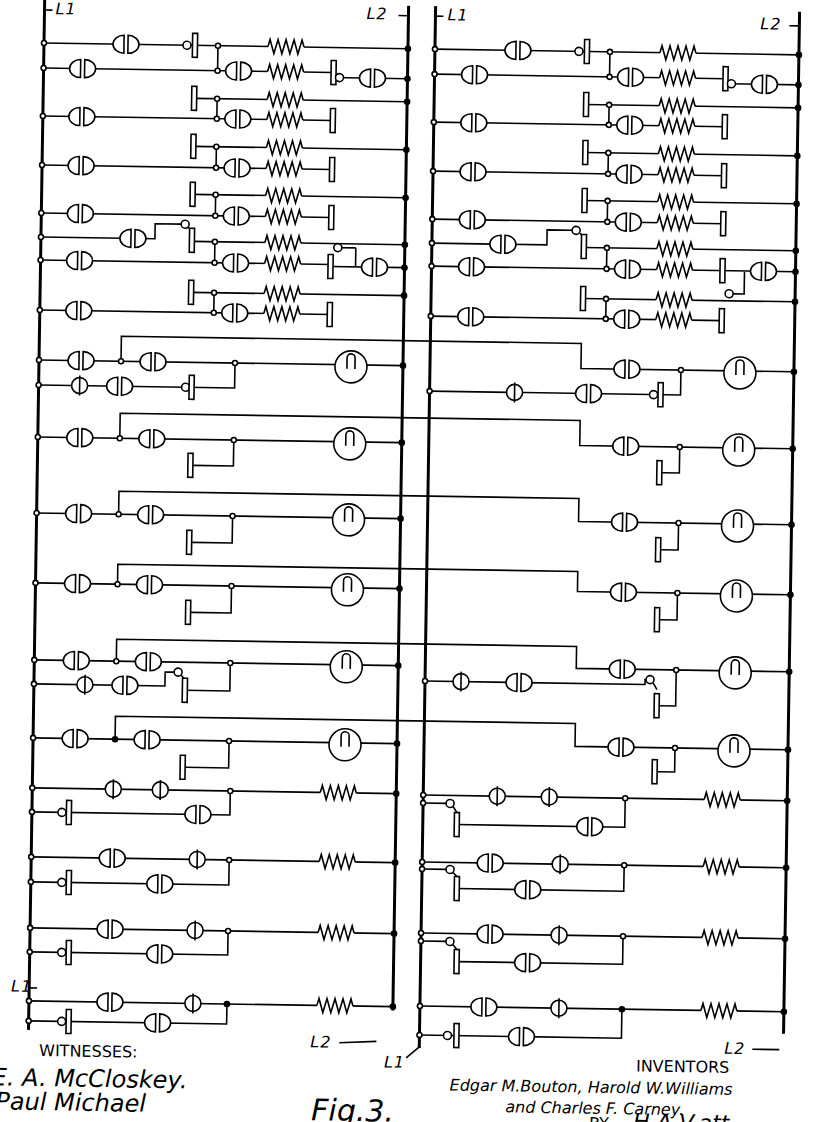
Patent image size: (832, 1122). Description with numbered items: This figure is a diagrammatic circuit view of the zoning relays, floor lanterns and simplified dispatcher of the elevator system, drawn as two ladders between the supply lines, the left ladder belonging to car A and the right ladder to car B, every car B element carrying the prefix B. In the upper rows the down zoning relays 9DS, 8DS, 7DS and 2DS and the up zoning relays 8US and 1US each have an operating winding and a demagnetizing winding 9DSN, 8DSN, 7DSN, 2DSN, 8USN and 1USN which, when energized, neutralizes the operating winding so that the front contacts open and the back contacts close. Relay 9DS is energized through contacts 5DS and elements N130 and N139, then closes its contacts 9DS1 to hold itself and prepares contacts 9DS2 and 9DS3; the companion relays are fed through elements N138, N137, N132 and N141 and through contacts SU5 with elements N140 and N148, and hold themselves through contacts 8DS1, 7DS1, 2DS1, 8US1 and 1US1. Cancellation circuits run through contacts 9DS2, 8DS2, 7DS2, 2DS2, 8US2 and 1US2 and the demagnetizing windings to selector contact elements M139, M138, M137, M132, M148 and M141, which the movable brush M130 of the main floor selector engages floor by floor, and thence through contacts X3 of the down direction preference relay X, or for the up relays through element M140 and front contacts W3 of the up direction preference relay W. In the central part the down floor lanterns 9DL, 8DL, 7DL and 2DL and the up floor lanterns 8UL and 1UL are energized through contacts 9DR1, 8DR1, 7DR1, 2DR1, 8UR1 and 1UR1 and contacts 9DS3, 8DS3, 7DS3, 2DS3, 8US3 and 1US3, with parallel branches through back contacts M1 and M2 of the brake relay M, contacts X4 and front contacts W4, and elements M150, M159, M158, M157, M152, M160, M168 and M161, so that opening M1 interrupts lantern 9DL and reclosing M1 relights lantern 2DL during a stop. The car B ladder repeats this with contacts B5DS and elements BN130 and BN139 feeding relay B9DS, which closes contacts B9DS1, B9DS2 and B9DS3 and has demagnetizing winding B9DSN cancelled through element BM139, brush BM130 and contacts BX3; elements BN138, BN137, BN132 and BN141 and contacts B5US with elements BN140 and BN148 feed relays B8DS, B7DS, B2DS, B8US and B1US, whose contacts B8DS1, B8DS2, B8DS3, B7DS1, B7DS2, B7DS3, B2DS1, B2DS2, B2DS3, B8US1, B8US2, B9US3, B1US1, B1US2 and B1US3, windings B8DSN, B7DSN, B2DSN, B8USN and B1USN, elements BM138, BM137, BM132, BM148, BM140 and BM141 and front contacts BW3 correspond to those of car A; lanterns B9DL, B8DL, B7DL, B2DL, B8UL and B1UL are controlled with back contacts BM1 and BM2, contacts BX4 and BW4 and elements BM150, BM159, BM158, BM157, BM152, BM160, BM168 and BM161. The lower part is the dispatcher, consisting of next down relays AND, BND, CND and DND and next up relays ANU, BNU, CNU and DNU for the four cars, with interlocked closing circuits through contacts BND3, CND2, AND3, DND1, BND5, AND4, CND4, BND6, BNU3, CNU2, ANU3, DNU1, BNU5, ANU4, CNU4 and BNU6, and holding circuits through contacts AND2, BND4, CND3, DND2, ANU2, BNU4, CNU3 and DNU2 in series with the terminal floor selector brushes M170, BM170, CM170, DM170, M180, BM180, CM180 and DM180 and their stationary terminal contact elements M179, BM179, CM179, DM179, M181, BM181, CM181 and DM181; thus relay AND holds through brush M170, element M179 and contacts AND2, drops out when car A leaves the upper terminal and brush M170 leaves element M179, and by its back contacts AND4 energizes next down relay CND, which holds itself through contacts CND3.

The contacts of down selector relay SD 5DS is at (134, 36).
The circuit element N130 is at (187, 39).
The circuit element N139 is at (200, 36).
The down zoning relay 9DS is at (294, 37).
The contacts of zoning relay 9DS 9DS1 is at (96, 58).
The contacts of zoning relay 9DS 9DS2 is at (244, 64).
The demagnetizing winding of relay 9DS 9DSN is at (303, 67).
The relay coil M139 is at (339, 66).
The movable contact brush of main floor selector M130 is at (354, 87).
The contacts of down direction preference relay X X3 is at (378, 84).
The relay coil N138 is at (192, 92).
The down zoning relay 8DS is at (301, 93).
The contacts of zoning relay 8DS 8DS1 is at (96, 106).
The contacts of zoning relay 8DS 8DS2 is at (244, 112).
The demagnetizing winding of relay 8DS 8DSN is at (303, 115).
The stationary contact element of main floor selector M138 is at (338, 116).
The relay coil N137 is at (192, 140).
The down zoning relay 7DS is at (300, 141).
The contacts of zoning relay 7DS 7DS1 is at (96, 155).
The contacts of zoning relay 7DS 7DS2 is at (243, 161).
The demagnetizing coil of relay 7DS 7DSN is at (302, 163).
The stationary contact element of main floor selector M137 is at (338, 165).
The relay coil N132 is at (192, 188).
The down zoning relay 2DS is at (299, 189).
The contacts of zoning relay 2DS 2DS1 is at (96, 203).
The contacts of zoning relay 2DS 2DS2 is at (242, 209).
The demagnetizing coil of relay 2DS 2DSN is at (301, 212).
The stationary contact element of main floor selector M132 is at (338, 213).
The contact SU5 is at (136, 230).
The contact N140 is at (186, 226).
The relay coil N148 is at (191, 250).
The up zoning relay 8US is at (299, 236).
The contact M140 is at (344, 240).
The contact 8US1 is at (96, 250).
The contact 8US2 is at (241, 256).
The demagnetizing winding of relay 8US 8USN is at (300, 259).
The relay coil M148 is at (339, 272).
The front contacts of up direction preference relay W W3 is at (392, 248).
The relay coil N141 is at (192, 287).
The up zoning relay 1US is at (298, 287).
The contact 1US1 is at (96, 301).
The contact 1US2 is at (241, 306).
The demagnetizing winding of relay 1US 1USN is at (300, 309).
The relay coil M141 is at (338, 311).
The contact 9DR1 is at (98, 350).
The contacts of zoning relay 9DS 9DS3 is at (170, 350).
The down floor lantern 9DL is at (342, 356).
The back contacts of brake relay M M1 is at (93, 384).
The contacts of down direction preference relay X X4 is at (137, 383).
The contact M150 is at (189, 381).
The relay coil M159 is at (201, 392).
The contacts in circuit of lantern 8DL 8DR1 is at (98, 427).
The contacts of zoning relay 8DS 8DS3 is at (166, 431).
The down floor lantern 8DL is at (340, 434).
The relay coil M158 is at (166, 465).
The contact 7DR1 is at (98, 503).
The contacts of zoning relay 7DS 7DS3 is at (170, 502).
The down floor lantern 7DL is at (340, 510).
The relay coil M157 is at (165, 542).
The contact 2DR1 is at (98, 573).
The contacts of zoning relay 2DS 2DS3 is at (166, 577).
The down floor lantern 2DL is at (340, 581).
The relay coil M152 is at (163, 611).
The contact 8UR1 is at (98, 650).
The contact 8US3 is at (166, 654).
The up floor lantern 8UL is at (340, 658).
The back contacts of brake relay M M2 is at (88, 690).
The front contacts of up direction preference relay W W4 is at (141, 690).
The contact M160 is at (193, 671).
The relay coil M168 is at (199, 694).
The contact 1UR1 is at (98, 728).
The contact 1US3 is at (166, 732).
The up floor lantern 1UL is at (340, 734).
The relay coil M161 is at (198, 767).
The back contacts of next down relay BND BND3 is at (126, 780).
The back contacts of next down relay CND CND2 is at (170, 779).
The next down relay AND is at (331, 783).
The movable contact brush of main floor selector M170 is at (74, 808).
The stationary contact element of main floor selector M179 is at (85, 809).
The contacts of next down relay AND AND2 is at (195, 808).
The contacts of next down relay AND AND3 is at (136, 847).
The contact DND1 is at (211, 848).
The next down relay BND is at (329, 852).
The movable contact brush of main floor selector of car B BM170 is at (75, 878).
The stationary contact element of main floor selector of car B BM179 is at (86, 880).
The contacts of next down relay BND BND4 is at (153, 876).
The contacts of next down relay BND BND5 is at (136, 917).
The back contacts of next down relay AND AND4 is at (214, 916).
The next down relay CND is at (327, 922).
The contact CM170 is at (76, 948).
The relay coil CM179 is at (87, 958).
The contacts of next down relay CND CND3 is at (151, 947).
The contact CND4 is at (124, 994).
The back contacts of next down relay BND BND6 is at (207, 993).
The next down relay DND is at (326, 996).
The contact DM170 is at (77, 1017).
The relay coil DM179 is at (88, 1027).
The contact DND2 is at (186, 1026).
The contacts of down selector relay of car B B5DS is at (527, 36).
The circuit element BN130 is at (579, 39).
The circuit element BN139 is at (592, 36).
The down zoning relay of car B B9DS is at (686, 45).
The contacts of zoning relay B9DS B9DS1 is at (489, 58).
The contacts of zoning relay B9DS B9DS2 is at (637, 71).
The demagnetizing winding of relay B9DS B9DSN is at (696, 75).
The relay coil BM139 is at (743, 75).
The movable contact brush of main floor selector of car B BM130 is at (744, 93).
The contacts of down direction preference relay of car B BX3 is at (773, 65).
The relay coil BN138 is at (584, 92).
The down zoning relay of car B B8DS is at (699, 100).
The contacts of zoning relay B8DS B8DS1 is at (489, 107).
The contacts of zoning relay B8DS B8DS2 is at (637, 119).
The demagnetizing winding of relay B8DS B8DSN is at (696, 123).
The stationary contact element of main floor selector of car B BM138 is at (731, 116).
The relay coil BN137 is at (584, 140).
The down zoning relay of car B B7DS is at (698, 148).
The contacts of zoning relay B7DS B7DS1 is at (489, 155).
The contacts of zoning relay B7DS B7DS2 is at (636, 168).
The demagnetizing coil of relay B7DS B7DSN is at (695, 171).
The stationary contact element of main floor selector of car B BM137 is at (731, 165).
The relay coil BN132 is at (584, 188).
The down zoning relay of car B B2DS is at (697, 196).
The contacts of zoning relay B2DS B2DS1 is at (489, 203).
The contacts of zoning relay B2DS B2DS2 is at (635, 216).
The demagnetizing coil of relay B2DS B2DSN is at (694, 220).
The stationary contact element of main floor selector of car B BM132 is at (731, 213).
The contact B5US is at (517, 231).
The contact BN140 is at (576, 221).
The relay coil BN148 is at (583, 250).
The up zoning relay of car B B8US is at (697, 243).
The front contacts of up direction preference relay of car B BW3 is at (788, 247).
The contact BM140 is at (756, 298).
The contact B8US1 is at (469, 268).
The contact B8US2 is at (634, 263).
The demagnetizing winding of relay B8US B8USN is at (692, 267).
The relay coil BM148 is at (748, 266).
The relay coil BN141 is at (584, 287).
The up zoning relay of car B B1US is at (695, 294).
The contact B1US1 is at (489, 301).
The contact B1US2 is at (634, 313).
The demagnetizing winding of relay B1US B1USN is at (692, 317).
The relay coil BM141 is at (731, 311).
The contacts of zoning relay B9DS B9DS3 is at (644, 350).
The down floor lantern of car B B9DL is at (742, 343).
The back contacts of brake relay of car B BM1 is at (524, 376).
The contacts of down direction preference relay of car B BX4 is at (600, 376).
The contact BM150 is at (656, 382).
The relay coil BM159 is at (670, 392).
The contacts of zoning relay B8DS B8DS3 is at (644, 427).
The down floor lantern of car B B8DL is at (738, 430).
The relay coil BM158 is at (630, 472).
The contacts of zoning relay B7DS B7DS3 is at (644, 502).
The down floor lantern of car B B7DL is at (738, 505).
The relay coil BM157 is at (629, 549).
The contacts of zoning relay B2DS B2DS3 is at (644, 573).
The down floor lantern of car B B2DL is at (738, 576).
The relay coil BM152 is at (628, 619).
The contact B9US3 is at (644, 650).
The up floor lantern of car B B8UL is at (740, 652).
The back contacts of brake relay of car B BM2 is at (475, 665).
The front contacts of up direction preference relay of car B BW4 is at (539, 665).
The contact BM160 is at (656, 674).
The relay coil BM168 is at (664, 700).
The contact B1US3 is at (644, 728).
The up floor lantern of car B B1UL is at (738, 730).
The relay coil BM161 is at (662, 762).
The contact BNU3 is at (512, 777).
The contact CNU2 is at (564, 777).
The next up relay ANU is at (718, 789).
The contact M180 is at (467, 800).
The relay coil M181 is at (473, 823).
The contact ANU2 is at (608, 808).
The contact ANU3 is at (512, 847).
The contact DNU1 is at (576, 848).
The next up relay BNU is at (714, 858).
The contact BM180 is at (468, 868).
The relay coil BM181 is at (474, 893).
The contact BNU4 is at (555, 882).
The contact BNU5 is at (512, 916).
The contact ANU4 is at (576, 916).
The next up relay CNU is at (713, 928).
The contact CM180 is at (468, 939).
The relay coil CM181 is at (475, 965).
The contact CNU3 is at (556, 953).
The contact CNU4 is at (500, 994).
The contact BNU6 is at (574, 994).
The next up relay DNU is at (712, 1001).
The contact DM180 is at (461, 1026).
The relay coil DM181 is at (476, 1040).
The contact DNU2 is at (548, 1026).